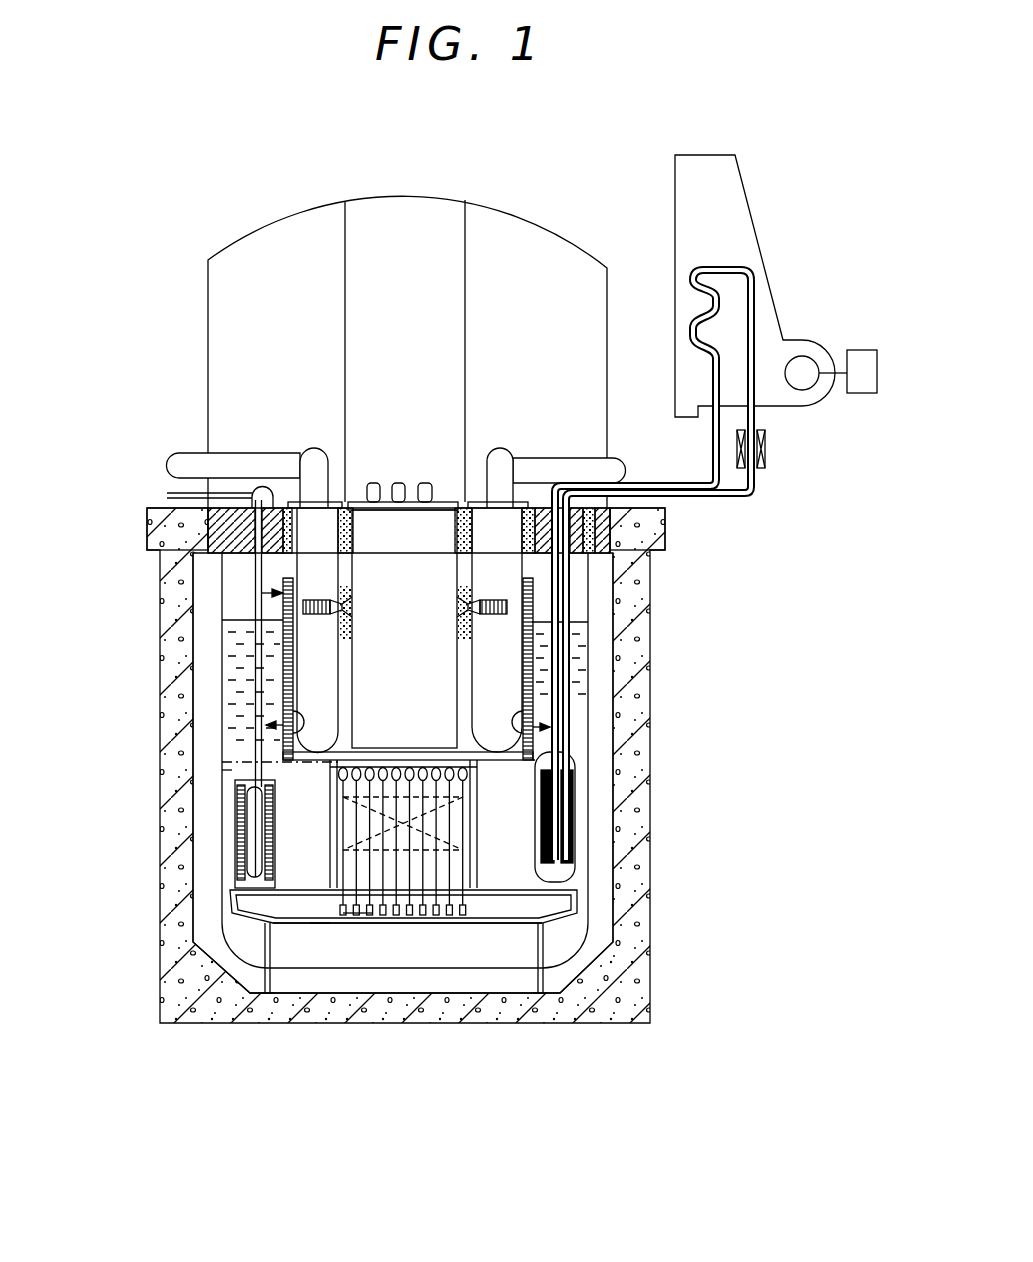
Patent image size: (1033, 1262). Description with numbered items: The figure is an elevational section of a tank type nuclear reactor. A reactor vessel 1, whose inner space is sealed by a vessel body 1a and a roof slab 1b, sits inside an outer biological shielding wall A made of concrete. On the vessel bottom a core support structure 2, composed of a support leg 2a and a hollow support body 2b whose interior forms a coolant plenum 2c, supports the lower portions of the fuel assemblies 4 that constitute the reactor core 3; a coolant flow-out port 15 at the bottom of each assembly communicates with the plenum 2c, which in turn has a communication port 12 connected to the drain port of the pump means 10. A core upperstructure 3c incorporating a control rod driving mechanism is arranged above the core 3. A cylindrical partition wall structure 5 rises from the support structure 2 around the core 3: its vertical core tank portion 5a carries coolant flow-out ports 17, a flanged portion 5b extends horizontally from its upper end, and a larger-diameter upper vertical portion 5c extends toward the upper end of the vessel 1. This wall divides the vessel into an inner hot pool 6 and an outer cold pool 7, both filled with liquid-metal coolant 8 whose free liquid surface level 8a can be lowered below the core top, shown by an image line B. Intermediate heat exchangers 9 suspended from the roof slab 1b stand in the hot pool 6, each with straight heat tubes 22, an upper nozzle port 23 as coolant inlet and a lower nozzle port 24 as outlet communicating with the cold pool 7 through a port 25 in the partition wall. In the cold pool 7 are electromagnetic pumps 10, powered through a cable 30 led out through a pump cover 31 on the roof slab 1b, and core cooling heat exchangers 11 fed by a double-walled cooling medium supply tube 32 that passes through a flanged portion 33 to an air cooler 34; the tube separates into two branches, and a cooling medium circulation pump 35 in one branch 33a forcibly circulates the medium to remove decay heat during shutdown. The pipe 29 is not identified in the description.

The reactor vessel 1 is at (600, 848).
The vessel body 1a is at (590, 875).
The roof slab 1b is at (200, 528).
The core support structure 2 is at (295, 896).
The support leg 2a is at (262, 985).
The support body 2b is at (512, 925).
The coolant plenum 2c is at (322, 905).
The reactor core 3 is at (401, 796).
The core upperstructure 3c is at (446, 518).
The fuel assemblies 4 is at (320, 893).
The partition wall structure 5 is at (262, 590).
The core tank portion 5a is at (330, 855).
The flanged portion 5b is at (312, 765).
The upper vertical portion 5c is at (265, 642).
The hot pool 6 is at (345, 662).
The cold pool 7 is at (582, 735).
The coolant 8 is at (603, 625).
The free liquid surface level 8a is at (545, 560).
The intermediate heat exchangers 9 is at (300, 685).
The pump means 10 is at (240, 820).
The core cooling heat exchangers 11 is at (580, 767).
The communication port 12 is at (300, 905).
The coolant flow-out port 15 is at (373, 913).
The coolant flow-out ports 17 is at (450, 760).
The straight heat tubes 22 is at (318, 605).
The nozzle port 23 is at (345, 612).
The nozzle port 24 is at (285, 722).
The port 25 is at (232, 762).
The coolant pipe 29 is at (195, 452).
The cable 30 is at (262, 593).
The pump cover 31 is at (240, 492).
The cooling medium supply tube 32 is at (560, 700).
The flanged portion 33 is at (704, 565).
The separated tube 33a is at (757, 492).
The air cooler 34 is at (760, 228).
The cooling medium circulation pump 35 is at (768, 440).
The outer biological shielding wall A is at (590, 960).
The image line B is at (235, 768).